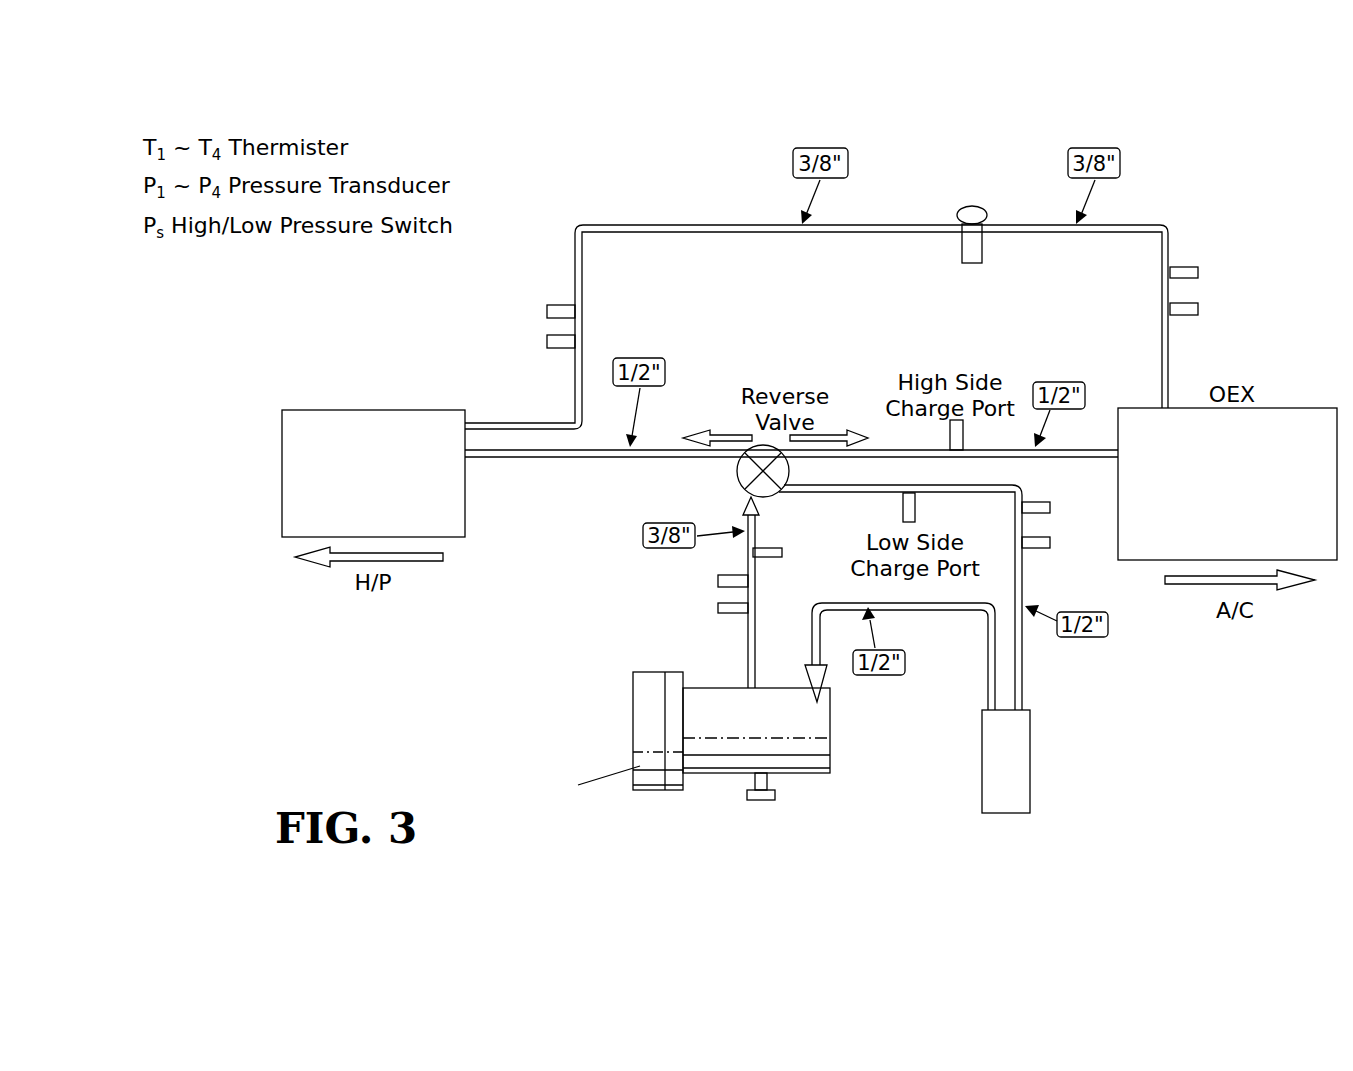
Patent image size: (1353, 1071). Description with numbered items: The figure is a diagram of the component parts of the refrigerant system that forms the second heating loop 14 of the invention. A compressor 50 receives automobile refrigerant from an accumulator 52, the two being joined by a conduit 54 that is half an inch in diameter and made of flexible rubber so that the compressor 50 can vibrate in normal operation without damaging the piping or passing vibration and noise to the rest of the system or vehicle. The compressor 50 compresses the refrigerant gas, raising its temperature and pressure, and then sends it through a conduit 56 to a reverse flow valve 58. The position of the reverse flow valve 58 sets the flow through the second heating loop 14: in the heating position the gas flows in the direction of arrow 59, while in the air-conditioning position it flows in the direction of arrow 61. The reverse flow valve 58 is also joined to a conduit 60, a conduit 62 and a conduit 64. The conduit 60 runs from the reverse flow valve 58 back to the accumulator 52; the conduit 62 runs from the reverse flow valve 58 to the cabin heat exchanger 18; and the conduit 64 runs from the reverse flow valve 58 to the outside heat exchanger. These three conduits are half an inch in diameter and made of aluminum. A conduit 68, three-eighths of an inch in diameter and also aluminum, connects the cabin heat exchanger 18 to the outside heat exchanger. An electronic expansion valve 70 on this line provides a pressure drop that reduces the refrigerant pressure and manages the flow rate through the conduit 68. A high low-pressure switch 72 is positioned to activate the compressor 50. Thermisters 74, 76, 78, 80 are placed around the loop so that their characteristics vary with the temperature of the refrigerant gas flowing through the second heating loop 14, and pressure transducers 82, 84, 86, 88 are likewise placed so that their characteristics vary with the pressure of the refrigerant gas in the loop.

The second heating loop 14 is at (1043, 149).
The cabin heat exchanger 18 is at (311, 423).
The compressor 50 is at (828, 748).
The accumulator 52 is at (1025, 800).
The conduit 54 is at (925, 608).
The conduit 56 is at (756, 648).
The reverse flow valve 58 is at (745, 471).
The arrow 59 is at (716, 435).
The conduit 60 is at (968, 486).
The arrow 61 is at (843, 436).
The conduit 62 is at (676, 447).
The conduit 64 is at (1097, 448).
The conduit 68 is at (1124, 222).
The electronic expansion valve 70 is at (986, 212).
The high low-pressure switch 72 is at (738, 618).
The thermister 74 is at (1040, 504).
The thermister 76 is at (770, 548).
The thermister 78 is at (1186, 314).
The thermister 80 is at (568, 340).
The pressure transducer 82 is at (1040, 555).
The pressure transducer 84 is at (725, 588).
The pressure transducer 86 is at (1184, 270).
The pressure transducer 88 is at (568, 308).